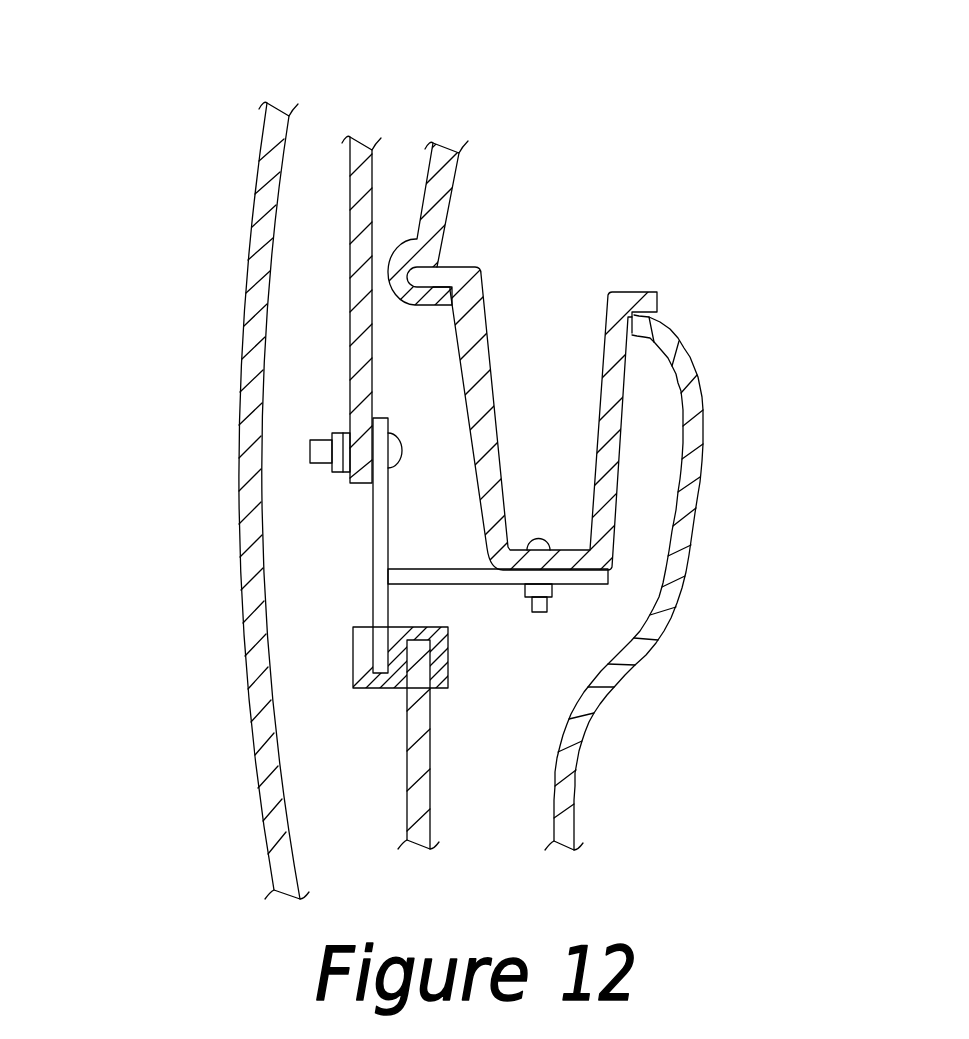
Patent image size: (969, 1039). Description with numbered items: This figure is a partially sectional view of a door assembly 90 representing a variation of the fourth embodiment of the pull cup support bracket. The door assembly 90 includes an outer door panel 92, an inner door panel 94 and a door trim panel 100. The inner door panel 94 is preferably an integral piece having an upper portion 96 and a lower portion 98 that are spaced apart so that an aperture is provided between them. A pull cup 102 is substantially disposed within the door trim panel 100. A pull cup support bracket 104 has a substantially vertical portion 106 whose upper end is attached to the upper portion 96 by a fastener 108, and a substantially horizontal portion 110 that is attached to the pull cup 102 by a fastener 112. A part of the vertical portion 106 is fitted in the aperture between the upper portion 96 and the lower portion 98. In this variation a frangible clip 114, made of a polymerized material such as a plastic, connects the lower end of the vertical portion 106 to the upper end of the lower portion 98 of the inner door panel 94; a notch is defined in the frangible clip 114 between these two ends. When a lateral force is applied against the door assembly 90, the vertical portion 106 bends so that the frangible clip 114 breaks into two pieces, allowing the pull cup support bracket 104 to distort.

The door assembly 90 is at (178, 523).
The outer door panel 92 is at (245, 318).
The inner door panel 94 is at (350, 222).
The upper portion 96 is at (352, 377).
The lower portion 98 is at (407, 760).
The door trim panel 100 is at (702, 490).
The pull cup 102 is at (492, 355).
The pull cup support bracket 104 is at (372, 530).
The vertical portion 106 is at (372, 607).
The fastener 108 is at (398, 470).
The horizontal portion 110 is at (474, 586).
The fastener 112 is at (545, 612).
The frangible clip 114 is at (353, 678).